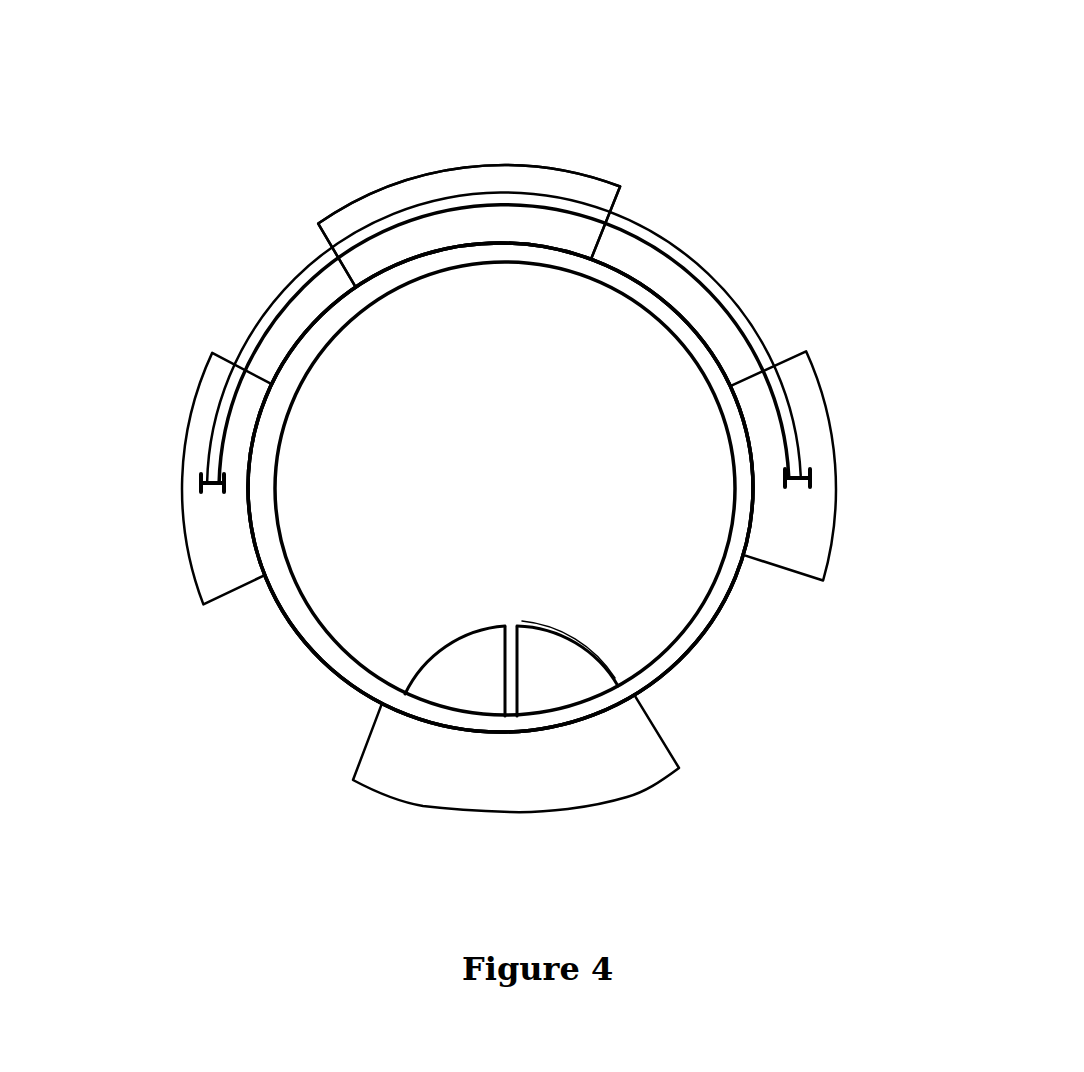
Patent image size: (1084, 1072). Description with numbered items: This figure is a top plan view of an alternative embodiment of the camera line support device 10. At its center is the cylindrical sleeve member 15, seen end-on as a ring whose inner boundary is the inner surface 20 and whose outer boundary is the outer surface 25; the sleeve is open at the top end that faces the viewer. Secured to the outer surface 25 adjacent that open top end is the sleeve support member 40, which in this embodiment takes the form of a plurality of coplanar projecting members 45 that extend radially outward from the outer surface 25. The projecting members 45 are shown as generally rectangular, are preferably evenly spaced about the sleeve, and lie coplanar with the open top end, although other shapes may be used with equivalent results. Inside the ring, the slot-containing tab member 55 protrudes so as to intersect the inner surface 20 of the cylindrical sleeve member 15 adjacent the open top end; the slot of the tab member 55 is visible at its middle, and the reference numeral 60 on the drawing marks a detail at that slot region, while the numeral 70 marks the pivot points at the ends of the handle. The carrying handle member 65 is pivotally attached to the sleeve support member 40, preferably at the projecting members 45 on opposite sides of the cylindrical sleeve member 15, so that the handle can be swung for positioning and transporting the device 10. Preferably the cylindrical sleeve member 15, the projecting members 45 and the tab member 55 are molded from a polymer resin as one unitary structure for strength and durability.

The camera line support device 10 is at (752, 150).
The cylindrical sleeve member 15 is at (307, 633).
The inner surface 20 is at (322, 358).
The outer surface 25 is at (740, 604).
The sleeve support member 40 is at (521, 138).
The projecting members 45 is at (377, 207).
The slot-containing tab member 55 is at (463, 665).
The post 60 is at (511, 605).
The carrying handle member 65 is at (283, 300).
The band end connectors 70 is at (208, 492).